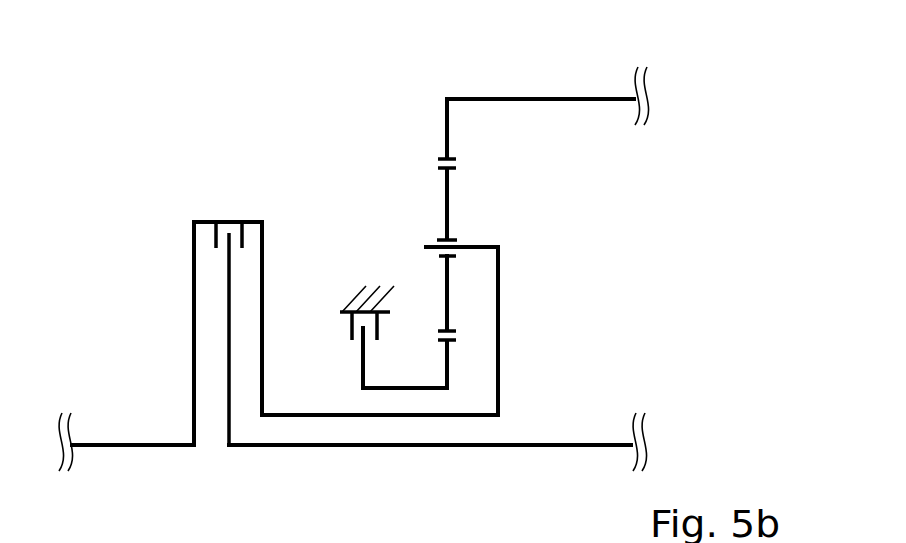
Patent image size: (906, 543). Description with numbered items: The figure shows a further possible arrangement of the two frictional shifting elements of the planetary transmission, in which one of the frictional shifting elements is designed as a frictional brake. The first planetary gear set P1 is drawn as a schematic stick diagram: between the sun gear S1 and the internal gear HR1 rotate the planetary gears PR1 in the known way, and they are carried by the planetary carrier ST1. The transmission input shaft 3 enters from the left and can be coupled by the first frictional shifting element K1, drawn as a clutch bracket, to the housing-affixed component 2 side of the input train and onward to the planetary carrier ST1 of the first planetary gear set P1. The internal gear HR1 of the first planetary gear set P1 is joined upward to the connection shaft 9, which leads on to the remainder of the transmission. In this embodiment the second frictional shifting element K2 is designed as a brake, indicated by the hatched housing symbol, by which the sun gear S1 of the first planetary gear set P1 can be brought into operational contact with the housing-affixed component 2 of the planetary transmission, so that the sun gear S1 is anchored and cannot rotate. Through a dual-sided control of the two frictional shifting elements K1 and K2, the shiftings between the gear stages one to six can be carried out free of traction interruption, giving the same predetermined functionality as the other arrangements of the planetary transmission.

The connection shaft 9 is at (575, 99).
The internal gear of the first planetary gear set HR1 is at (447, 133).
The planetary gears of the first planetary gear set PR1 is at (447, 198).
The planetary carrier of the first planetary gear set ST1 is at (468, 247).
The sun gear of the first planetary gear set S1 is at (447, 368).
The second frictional shifting element K2 is at (394, 319).
The first frictional shifting element K1 is at (228, 316).
The first planetary gear set P1 is at (428, 346).
The transmission input shaft 3 is at (116, 443).
The housing-affixed component 2 is at (437, 478).